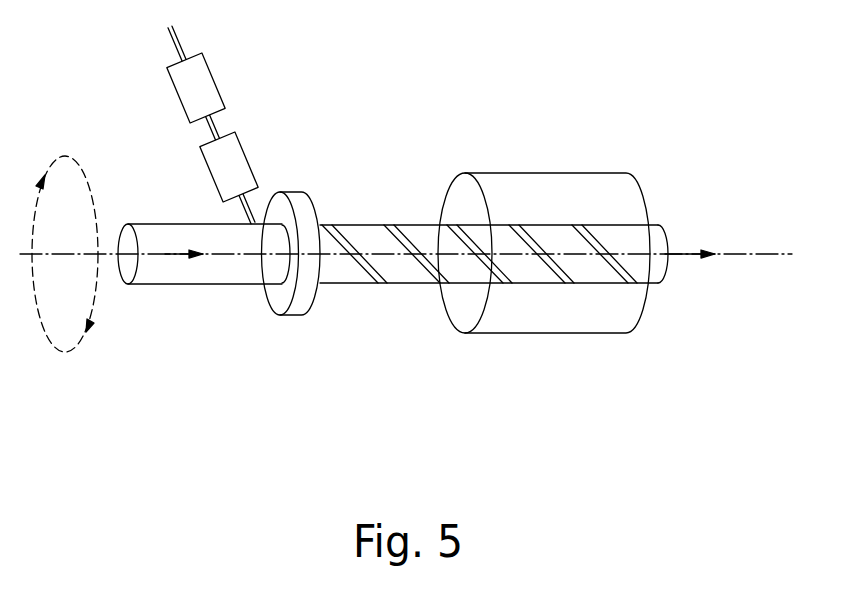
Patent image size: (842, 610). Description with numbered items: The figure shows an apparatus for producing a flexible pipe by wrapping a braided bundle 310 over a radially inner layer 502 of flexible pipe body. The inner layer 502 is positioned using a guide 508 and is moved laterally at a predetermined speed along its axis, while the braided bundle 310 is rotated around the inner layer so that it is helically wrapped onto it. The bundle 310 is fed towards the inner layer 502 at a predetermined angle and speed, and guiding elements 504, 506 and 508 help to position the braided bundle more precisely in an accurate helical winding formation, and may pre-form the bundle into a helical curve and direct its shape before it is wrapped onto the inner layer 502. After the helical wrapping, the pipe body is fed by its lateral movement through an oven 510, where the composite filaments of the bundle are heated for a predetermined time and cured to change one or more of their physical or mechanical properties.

The braided bundle 310 is at (178, 39).
The radially inner layer 502 is at (182, 223).
The guiding element 504 is at (213, 80).
The guiding element 506 is at (245, 158).
The guide 508 is at (293, 316).
The oven 510 is at (547, 333).